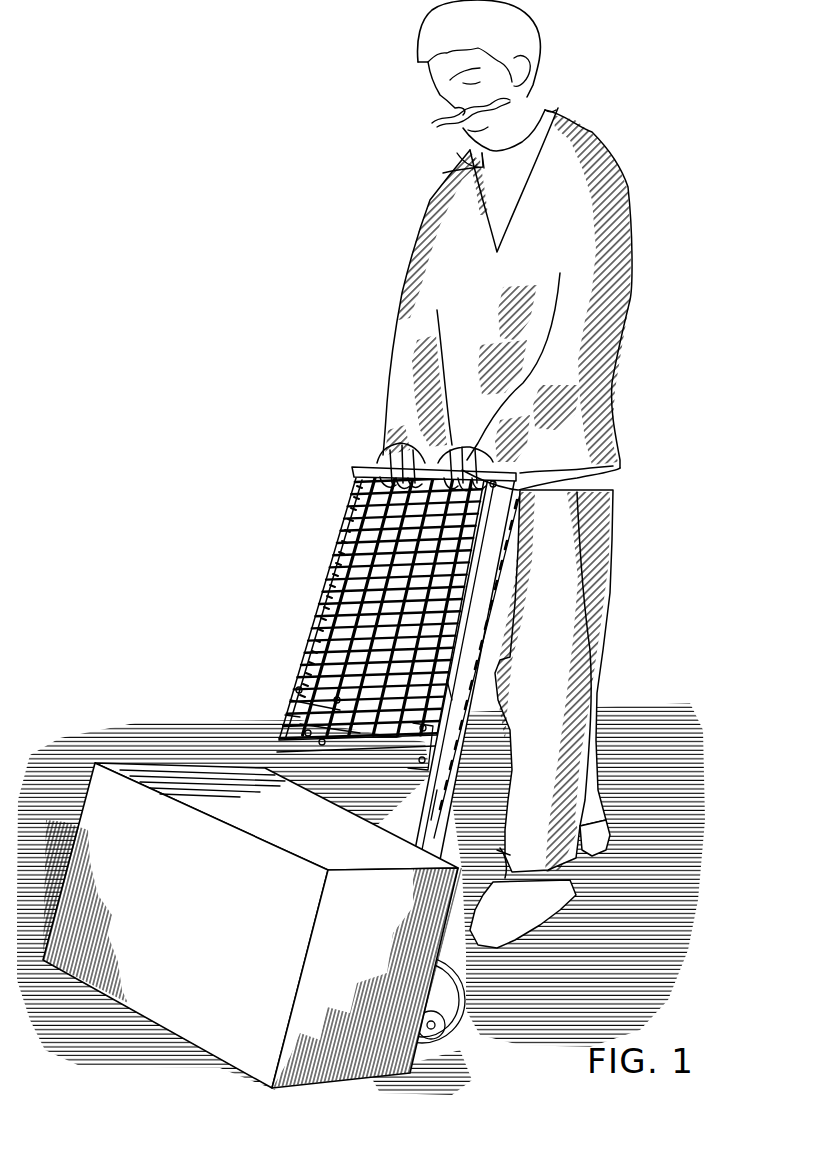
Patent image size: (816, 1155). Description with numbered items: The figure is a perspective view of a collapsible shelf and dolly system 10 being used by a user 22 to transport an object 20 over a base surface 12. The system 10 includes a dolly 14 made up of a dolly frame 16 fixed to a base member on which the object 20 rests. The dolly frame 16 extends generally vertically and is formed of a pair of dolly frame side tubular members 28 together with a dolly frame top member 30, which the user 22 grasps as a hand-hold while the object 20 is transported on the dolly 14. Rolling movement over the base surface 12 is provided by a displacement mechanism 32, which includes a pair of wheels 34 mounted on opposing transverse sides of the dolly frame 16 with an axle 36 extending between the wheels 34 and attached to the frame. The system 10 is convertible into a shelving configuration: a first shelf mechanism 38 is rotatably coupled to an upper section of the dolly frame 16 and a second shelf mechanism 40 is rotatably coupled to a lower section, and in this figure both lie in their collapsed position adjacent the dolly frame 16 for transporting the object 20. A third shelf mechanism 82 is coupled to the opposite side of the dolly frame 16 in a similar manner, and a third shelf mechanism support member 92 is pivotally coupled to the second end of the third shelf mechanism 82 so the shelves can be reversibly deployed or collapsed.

The collapsible shelf and dolly system 10 is at (426, 748).
The base surface 12 is at (663, 782).
The dolly 14 is at (336, 623).
The dolly frame 16 is at (531, 669).
The object 20 is at (160, 1035).
The user 22 is at (627, 305).
The dolly frame side tubular member 28 is at (455, 690).
The dolly frame top member 30 is at (597, 458).
The displacement mechanism 32 is at (514, 1029).
The wheel 34 is at (462, 1018).
The axle 36 is at (447, 1046).
The first shelf mechanism 38 is at (300, 614).
The second shelf mechanism 40 is at (290, 713).
The third shelf mechanism 82 is at (508, 597).
The third shelf mechanism support member 92 is at (452, 789).